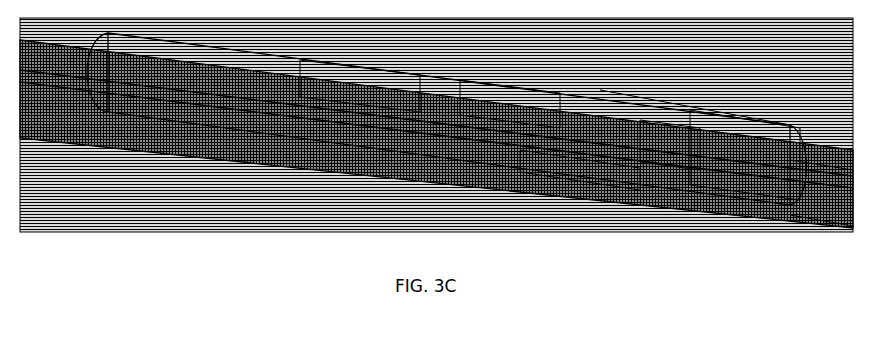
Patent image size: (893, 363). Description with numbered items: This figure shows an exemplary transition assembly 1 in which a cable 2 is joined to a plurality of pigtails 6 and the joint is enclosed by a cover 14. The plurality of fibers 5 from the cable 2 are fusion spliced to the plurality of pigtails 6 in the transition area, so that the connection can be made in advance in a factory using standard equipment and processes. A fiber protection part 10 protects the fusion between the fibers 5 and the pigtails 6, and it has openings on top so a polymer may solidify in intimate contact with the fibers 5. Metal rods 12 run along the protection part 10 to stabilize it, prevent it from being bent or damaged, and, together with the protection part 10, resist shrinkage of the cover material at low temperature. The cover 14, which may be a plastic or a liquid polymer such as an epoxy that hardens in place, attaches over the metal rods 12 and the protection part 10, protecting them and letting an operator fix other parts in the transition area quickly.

The transition assembly 1 is at (260, 214).
The cable 2 is at (807, 218).
The plurality of fibers 5 is at (664, 155).
The plurality of pigtails 6 is at (50, 98).
The fiber protection part 10 is at (452, 106).
The metal rods 12 is at (592, 182).
The cover 14 is at (716, 110).